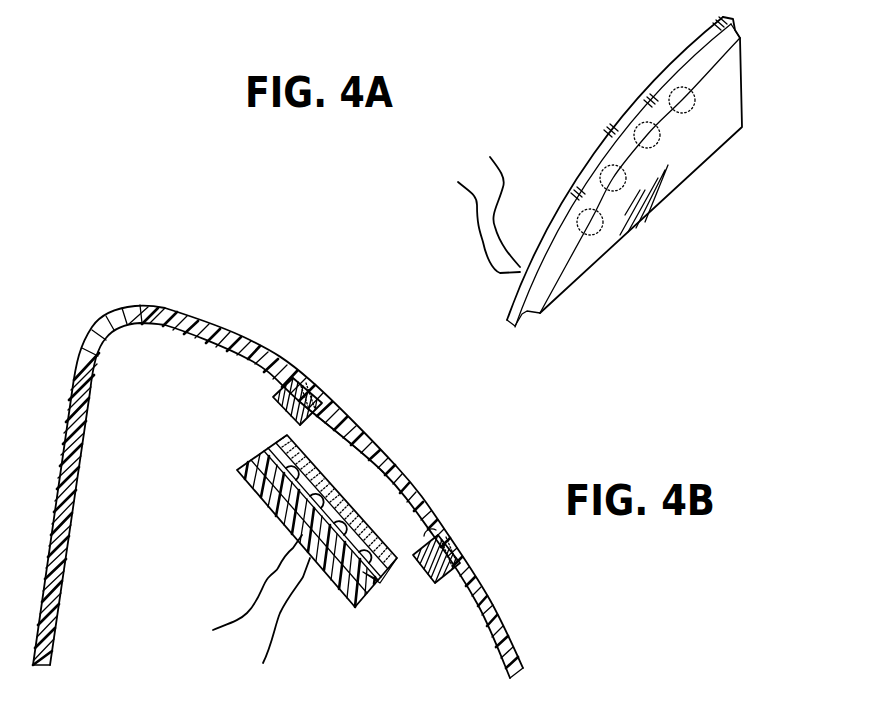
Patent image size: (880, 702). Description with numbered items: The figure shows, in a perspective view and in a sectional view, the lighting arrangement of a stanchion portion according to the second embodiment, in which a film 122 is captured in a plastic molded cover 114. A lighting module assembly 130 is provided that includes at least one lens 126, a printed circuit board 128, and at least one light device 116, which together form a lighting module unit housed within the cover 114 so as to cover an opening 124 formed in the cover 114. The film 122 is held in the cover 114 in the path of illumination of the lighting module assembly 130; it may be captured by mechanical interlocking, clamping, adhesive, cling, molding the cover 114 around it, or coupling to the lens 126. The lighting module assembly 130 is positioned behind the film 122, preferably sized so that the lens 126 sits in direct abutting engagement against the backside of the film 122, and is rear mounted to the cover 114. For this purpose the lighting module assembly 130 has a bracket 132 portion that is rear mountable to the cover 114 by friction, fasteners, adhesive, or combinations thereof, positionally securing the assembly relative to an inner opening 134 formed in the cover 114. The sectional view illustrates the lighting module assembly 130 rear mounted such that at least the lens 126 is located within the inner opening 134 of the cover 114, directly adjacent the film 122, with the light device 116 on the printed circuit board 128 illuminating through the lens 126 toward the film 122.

In FIG. 4B, the cover 114 is at (265, 343).
In FIG. 4A, the light device 116 is at (704, 85).
In FIG. 4B, the light device 116 is at (283, 455).
In FIG. 4B, the film 122 is at (388, 462).
In FIG. 4B, the opening 124 is at (452, 542).
In FIG. 4A, the lens 126 is at (728, 110).
In FIG. 4B, the lens 126 is at (325, 475).
In FIG. 4B, the printed circuit board 128 is at (370, 560).
In FIG. 4A, the lighting module assembly 130 is at (425, 233).
In FIG. 4B, the lighting module assembly 130 is at (225, 550).
In FIG. 4B, the bracket 132 is at (335, 583).
In FIG. 4B, the inner opening 134 is at (433, 523).